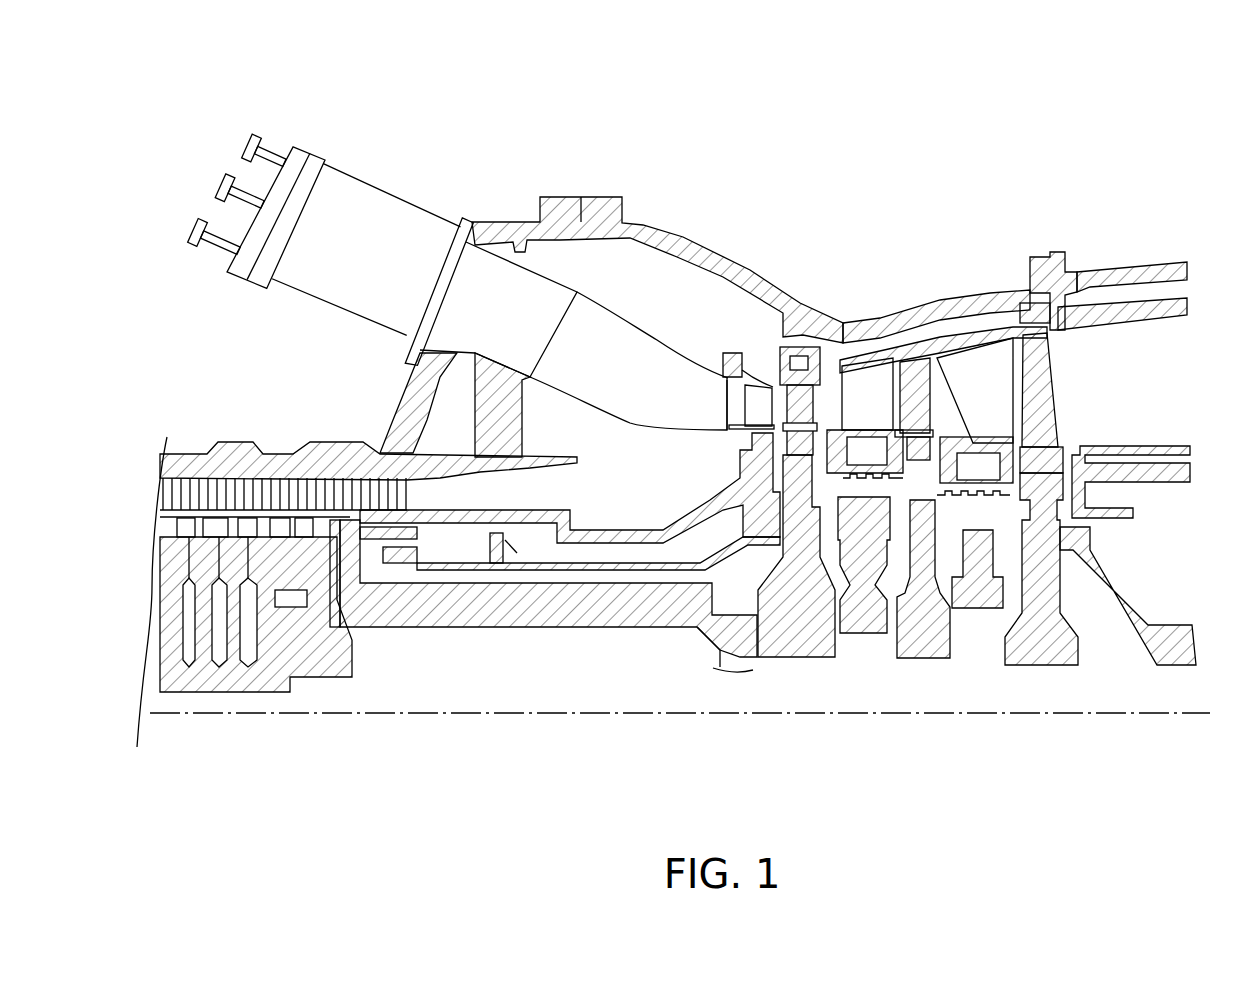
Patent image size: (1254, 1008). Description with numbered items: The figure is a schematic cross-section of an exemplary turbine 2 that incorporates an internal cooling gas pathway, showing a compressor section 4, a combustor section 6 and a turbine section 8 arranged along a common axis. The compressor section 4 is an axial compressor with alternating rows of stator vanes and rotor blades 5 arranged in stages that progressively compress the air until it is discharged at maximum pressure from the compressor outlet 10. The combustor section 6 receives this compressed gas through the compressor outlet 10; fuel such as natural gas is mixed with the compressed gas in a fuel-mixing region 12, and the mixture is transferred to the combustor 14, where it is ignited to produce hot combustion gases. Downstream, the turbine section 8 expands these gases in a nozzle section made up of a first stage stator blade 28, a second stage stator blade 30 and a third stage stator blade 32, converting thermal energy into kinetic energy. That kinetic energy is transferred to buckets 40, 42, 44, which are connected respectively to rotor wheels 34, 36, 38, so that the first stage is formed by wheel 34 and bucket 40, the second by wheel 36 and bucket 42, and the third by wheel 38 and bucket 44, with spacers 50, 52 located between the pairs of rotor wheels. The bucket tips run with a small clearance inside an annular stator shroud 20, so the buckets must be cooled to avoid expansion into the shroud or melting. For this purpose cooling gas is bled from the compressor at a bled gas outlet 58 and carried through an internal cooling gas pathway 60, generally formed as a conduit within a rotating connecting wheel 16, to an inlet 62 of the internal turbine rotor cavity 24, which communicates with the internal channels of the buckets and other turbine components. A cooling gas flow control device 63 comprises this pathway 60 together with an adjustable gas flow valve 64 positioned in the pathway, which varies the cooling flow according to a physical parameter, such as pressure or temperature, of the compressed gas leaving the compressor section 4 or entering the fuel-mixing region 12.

The turbine 2 is at (537, 100).
The compressor section 4 is at (183, 445).
The rotor blades 5 is at (245, 490).
The combustor section 6 is at (245, 112).
The turbine section 8 is at (897, 203).
The compressor outlet 10 is at (433, 497).
The fuel-mixing region 12 is at (486, 323).
The combustor 14 is at (593, 375).
The connecting wheel 16 is at (553, 688).
The annular stator shroud 20 is at (993, 298).
The internal turbine rotor cavity 24 is at (1117, 697).
The stator blade 28 is at (752, 400).
The stator blade 30 is at (870, 400).
The stator blade 32 is at (983, 390).
The rotor wheel 34 is at (808, 637).
The rotor wheel 36 is at (928, 640).
The rotor wheel 38 is at (1037, 650).
The bucket 40 is at (800, 400).
The bucket 42 is at (918, 395).
The bucket 44 is at (1043, 395).
The spacer 50 is at (873, 640).
The spacer 52 is at (980, 597).
The bled gas outlet 58 is at (367, 580).
The internal cooling gas pathway 60 is at (423, 577).
The inlet 62 is at (700, 630).
The cooling gas flow control device 63 is at (517, 553).
The adjustable gas flow valve 64 is at (515, 587).